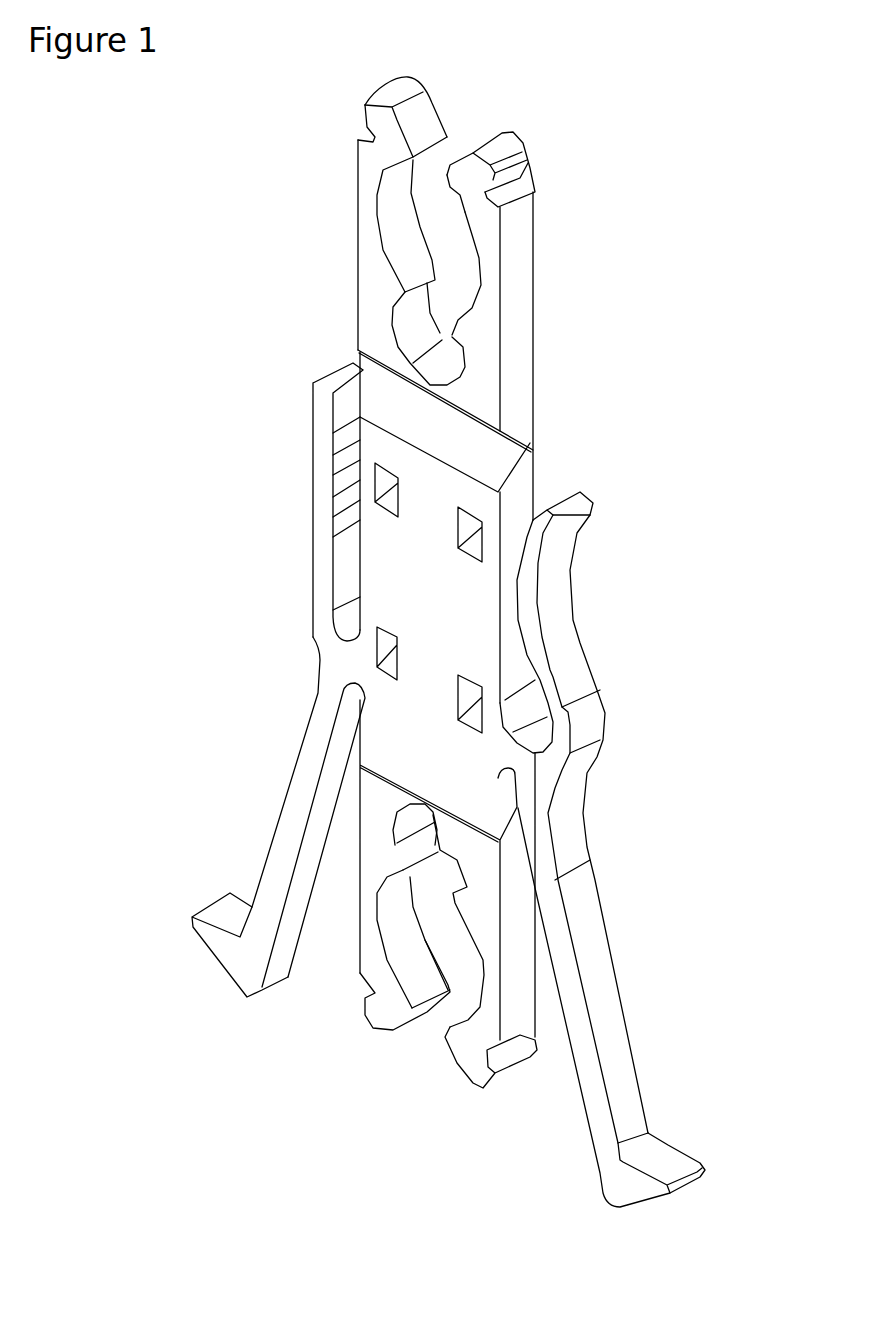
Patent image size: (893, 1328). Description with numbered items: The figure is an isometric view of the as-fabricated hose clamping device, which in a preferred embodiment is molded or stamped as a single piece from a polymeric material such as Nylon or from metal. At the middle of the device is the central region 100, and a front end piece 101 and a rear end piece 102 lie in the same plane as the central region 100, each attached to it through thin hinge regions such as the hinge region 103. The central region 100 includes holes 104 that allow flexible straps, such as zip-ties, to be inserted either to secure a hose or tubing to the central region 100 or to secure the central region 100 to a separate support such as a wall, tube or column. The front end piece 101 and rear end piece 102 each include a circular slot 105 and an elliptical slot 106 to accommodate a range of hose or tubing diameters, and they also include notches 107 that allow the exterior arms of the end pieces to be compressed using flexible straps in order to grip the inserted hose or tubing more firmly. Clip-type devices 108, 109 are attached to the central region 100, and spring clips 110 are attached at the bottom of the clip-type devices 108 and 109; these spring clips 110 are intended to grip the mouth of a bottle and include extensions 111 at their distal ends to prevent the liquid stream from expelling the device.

The central region 100 is at (407, 592).
The front end piece 101 is at (390, 1012).
The rear end piece 102 is at (380, 150).
The thin hinge region 103 is at (533, 443).
The holes 104 is at (463, 532).
The circular slot 105 is at (442, 338).
The elliptical slot 106 is at (440, 238).
The notches 107 is at (372, 134).
The clip-type device 108 is at (322, 438).
The clip-type device 109 is at (532, 566).
The spring clips 110 is at (245, 960).
The extensions 111 is at (660, 1153).